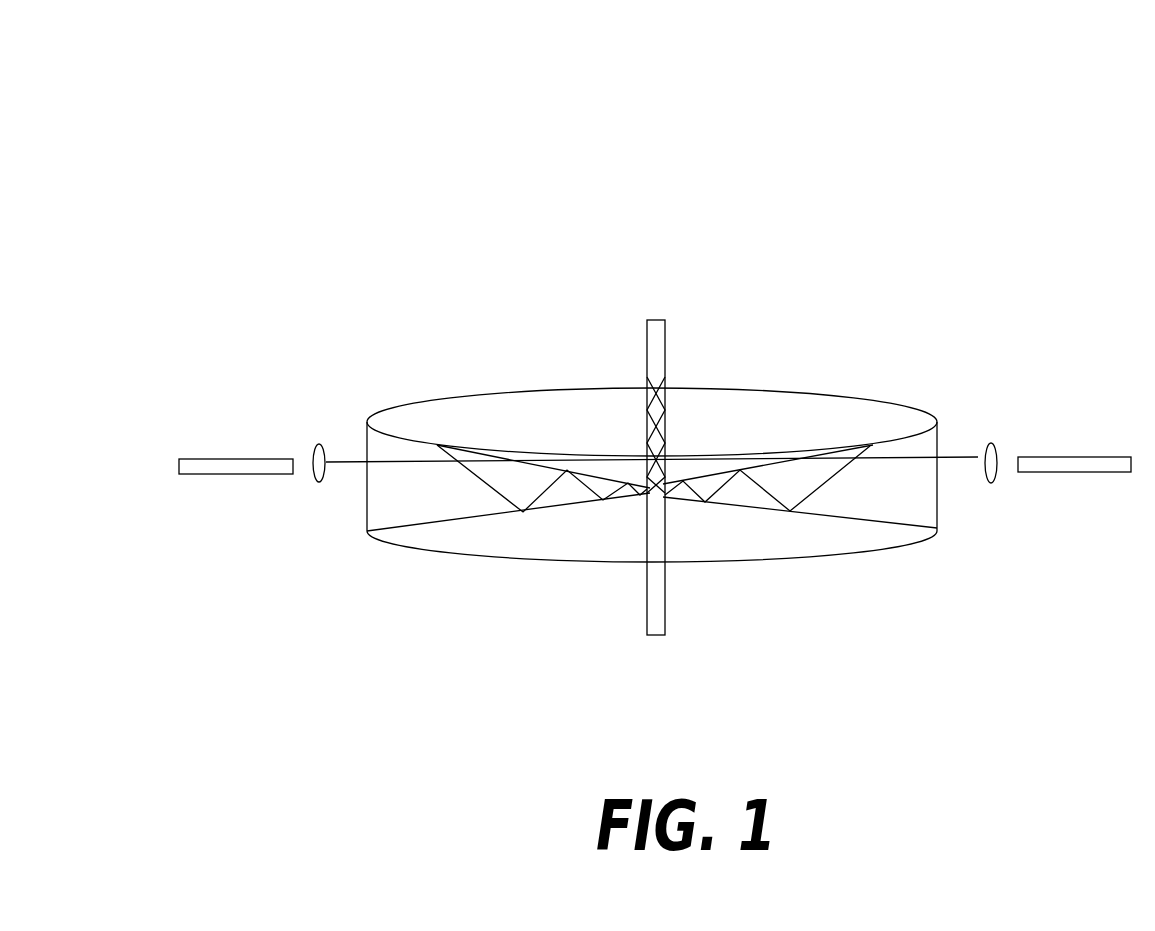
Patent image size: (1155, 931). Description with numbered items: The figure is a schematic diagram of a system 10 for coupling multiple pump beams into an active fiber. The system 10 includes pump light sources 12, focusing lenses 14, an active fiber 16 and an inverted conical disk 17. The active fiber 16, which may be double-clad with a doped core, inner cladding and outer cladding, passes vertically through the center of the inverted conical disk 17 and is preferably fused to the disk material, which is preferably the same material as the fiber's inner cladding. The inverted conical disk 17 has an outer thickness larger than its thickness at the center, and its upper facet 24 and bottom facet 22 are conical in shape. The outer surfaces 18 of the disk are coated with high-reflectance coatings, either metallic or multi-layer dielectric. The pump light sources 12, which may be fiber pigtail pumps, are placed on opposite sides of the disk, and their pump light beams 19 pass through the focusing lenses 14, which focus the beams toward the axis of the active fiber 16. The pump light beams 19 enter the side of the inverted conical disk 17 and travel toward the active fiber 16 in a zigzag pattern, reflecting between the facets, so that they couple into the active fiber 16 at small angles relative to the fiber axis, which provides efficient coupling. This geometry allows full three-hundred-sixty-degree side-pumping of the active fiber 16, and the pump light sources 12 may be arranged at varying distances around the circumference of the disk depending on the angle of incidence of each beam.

The system 10 is at (707, 135).
The pump light sources 12 is at (230, 474).
The focusing lenses 14 is at (320, 482).
The active fiber 16 is at (665, 348).
The inverted conical disk 17 is at (410, 514).
The outer surfaces 18 is at (562, 411).
The pump light beams 19 is at (899, 452).
The bottom facet 22 is at (665, 498).
The upper facet 24 is at (938, 508).